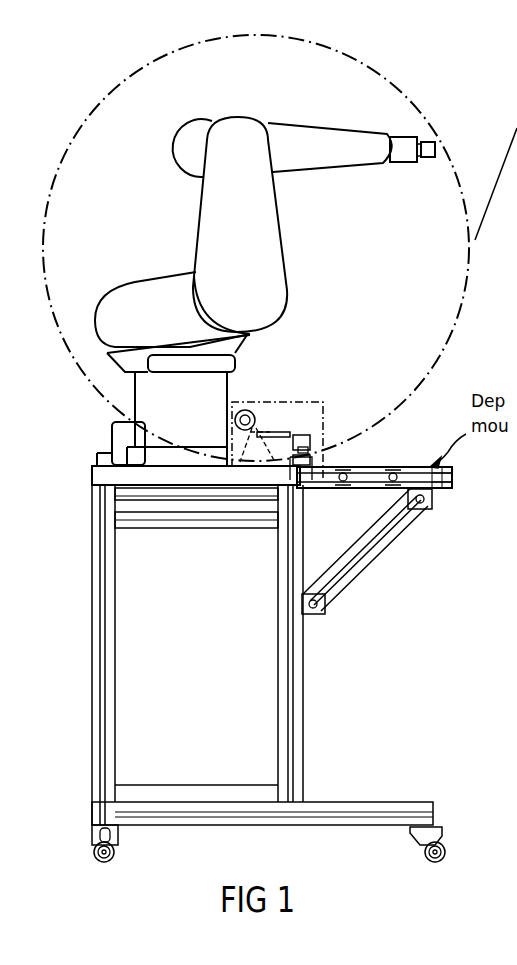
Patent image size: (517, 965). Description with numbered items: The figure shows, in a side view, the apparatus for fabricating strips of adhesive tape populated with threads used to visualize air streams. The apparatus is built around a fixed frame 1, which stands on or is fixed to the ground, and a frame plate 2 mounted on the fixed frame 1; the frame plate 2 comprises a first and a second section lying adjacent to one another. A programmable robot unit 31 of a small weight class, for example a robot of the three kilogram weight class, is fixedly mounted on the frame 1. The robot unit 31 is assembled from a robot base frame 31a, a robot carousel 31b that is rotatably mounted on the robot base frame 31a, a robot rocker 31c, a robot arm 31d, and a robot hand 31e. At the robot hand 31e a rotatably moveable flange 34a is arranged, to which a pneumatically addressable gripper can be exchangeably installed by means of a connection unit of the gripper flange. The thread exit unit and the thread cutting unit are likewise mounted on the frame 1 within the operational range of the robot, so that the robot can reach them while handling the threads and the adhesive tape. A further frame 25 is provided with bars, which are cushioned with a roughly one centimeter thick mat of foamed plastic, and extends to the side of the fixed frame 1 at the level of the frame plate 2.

The fixed frame 1 is at (98, 643).
The frame plate 2 is at (100, 473).
The frame 25 is at (372, 467).
The programmable robot unit 31 is at (108, 88).
The robot base frame 31a is at (146, 386).
The robot carousel 31b is at (148, 290).
The robot rocker 31c is at (212, 215).
The robot arm 31d is at (322, 142).
The robot hand 31e is at (399, 164).
The rotatably moveable flange 34a is at (428, 158).